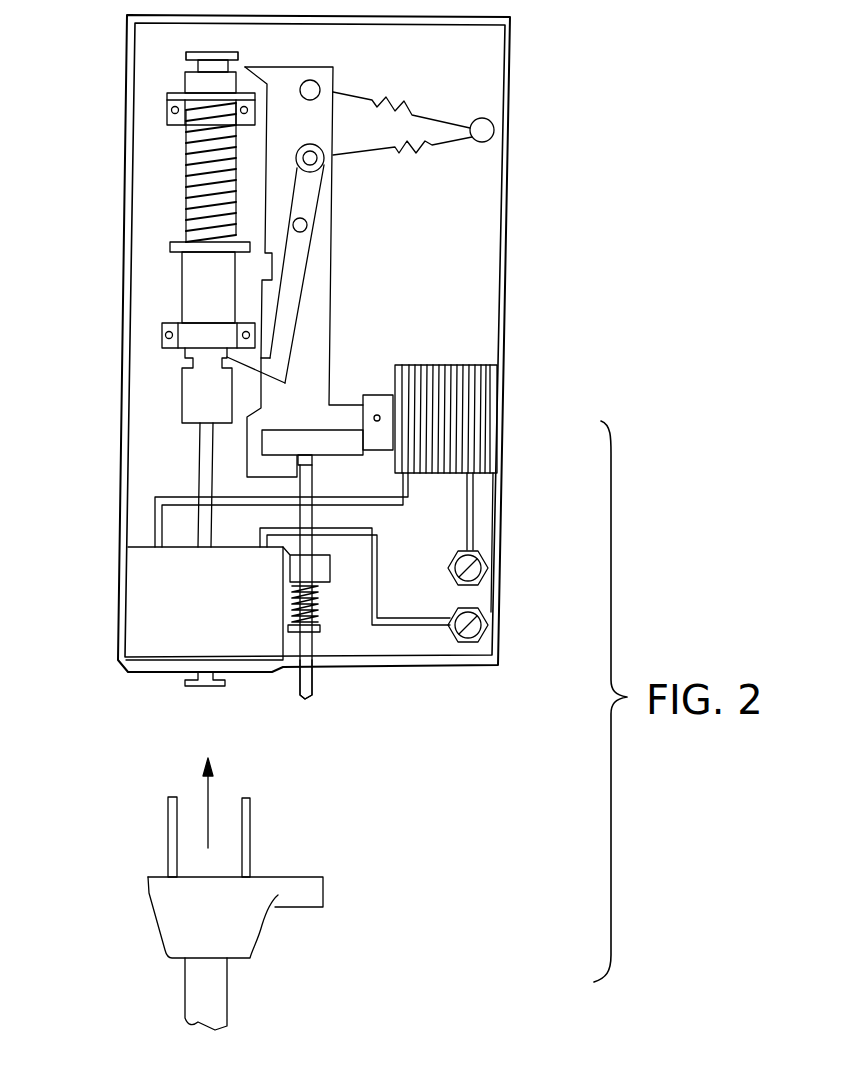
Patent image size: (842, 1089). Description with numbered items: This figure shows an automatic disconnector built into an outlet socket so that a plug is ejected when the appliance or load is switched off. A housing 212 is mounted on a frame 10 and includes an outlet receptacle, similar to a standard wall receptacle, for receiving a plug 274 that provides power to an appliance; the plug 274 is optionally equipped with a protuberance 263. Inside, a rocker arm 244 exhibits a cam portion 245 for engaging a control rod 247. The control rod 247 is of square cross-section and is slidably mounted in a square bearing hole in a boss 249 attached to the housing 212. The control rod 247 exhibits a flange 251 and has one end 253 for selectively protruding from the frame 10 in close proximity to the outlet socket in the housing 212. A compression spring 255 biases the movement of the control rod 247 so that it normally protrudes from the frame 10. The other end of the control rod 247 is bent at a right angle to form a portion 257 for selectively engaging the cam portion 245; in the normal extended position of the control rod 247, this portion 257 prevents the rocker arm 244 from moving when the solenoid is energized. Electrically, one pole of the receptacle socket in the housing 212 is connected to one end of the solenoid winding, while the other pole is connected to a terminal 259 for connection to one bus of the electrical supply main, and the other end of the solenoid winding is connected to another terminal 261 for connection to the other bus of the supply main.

The frame 10 is at (510, 116).
The housing 212 is at (148, 630).
The rocker arm 244 is at (330, 300).
The cam portion 245 is at (252, 465).
The control rod 247 is at (316, 490).
The boss 249 is at (330, 568).
The flange 251 is at (320, 628).
The end of control rod 253 is at (313, 683).
The compression spring 255 is at (292, 612).
The bent portion of control rod 257 is at (297, 462).
The terminal 259 is at (488, 562).
The terminal 261 is at (488, 622).
The protuberance 263 is at (302, 887).
The plug 274 is at (228, 938).